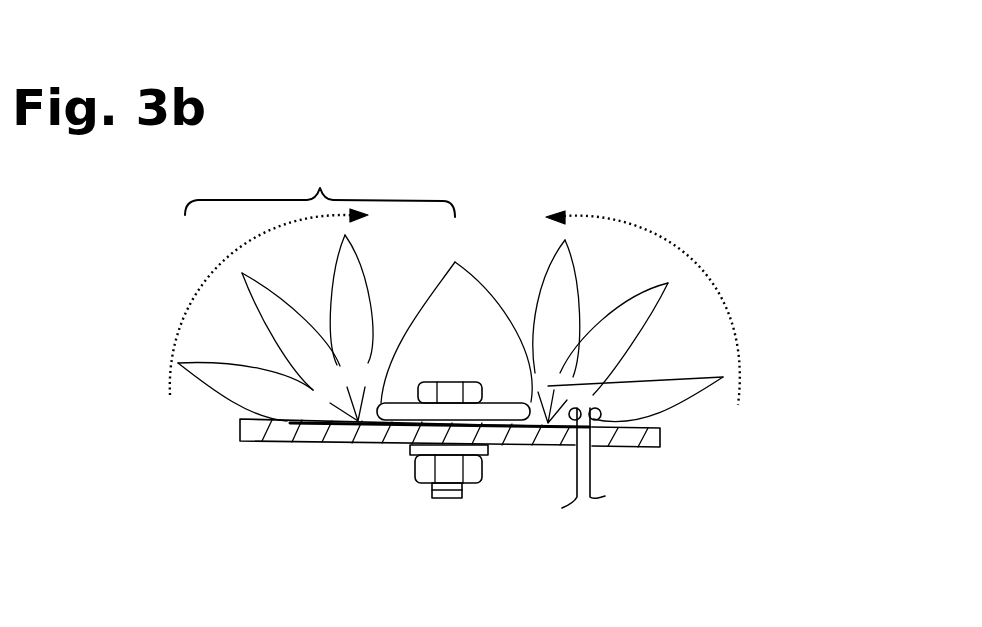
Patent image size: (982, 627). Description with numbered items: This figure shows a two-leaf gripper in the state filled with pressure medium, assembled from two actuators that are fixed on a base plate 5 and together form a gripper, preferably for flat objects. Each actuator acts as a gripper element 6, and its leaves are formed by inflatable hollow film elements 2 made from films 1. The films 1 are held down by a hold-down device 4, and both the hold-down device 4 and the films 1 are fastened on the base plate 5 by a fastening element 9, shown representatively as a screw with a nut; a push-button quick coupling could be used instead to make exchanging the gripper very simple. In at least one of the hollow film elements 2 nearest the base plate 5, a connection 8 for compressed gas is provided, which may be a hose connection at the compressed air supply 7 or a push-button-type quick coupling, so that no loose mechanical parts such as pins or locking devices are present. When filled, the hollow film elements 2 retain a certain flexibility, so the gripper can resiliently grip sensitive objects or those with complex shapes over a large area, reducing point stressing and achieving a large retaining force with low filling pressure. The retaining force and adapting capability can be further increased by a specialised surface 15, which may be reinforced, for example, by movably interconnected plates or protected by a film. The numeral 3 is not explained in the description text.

The film 1 is at (573, 272).
The inflatable hollow film element 2 is at (557, 307).
The petal base 3 is at (537, 377).
The hold-down device 4 is at (365, 420).
The base plate 5 is at (517, 437).
The gripper element 6 is at (455, 280).
The compressed air supply 7 is at (585, 472).
The connection for compressed gas 8 is at (600, 418).
The fastening element 9 is at (477, 514).
The specialised surface 15 is at (448, 491).